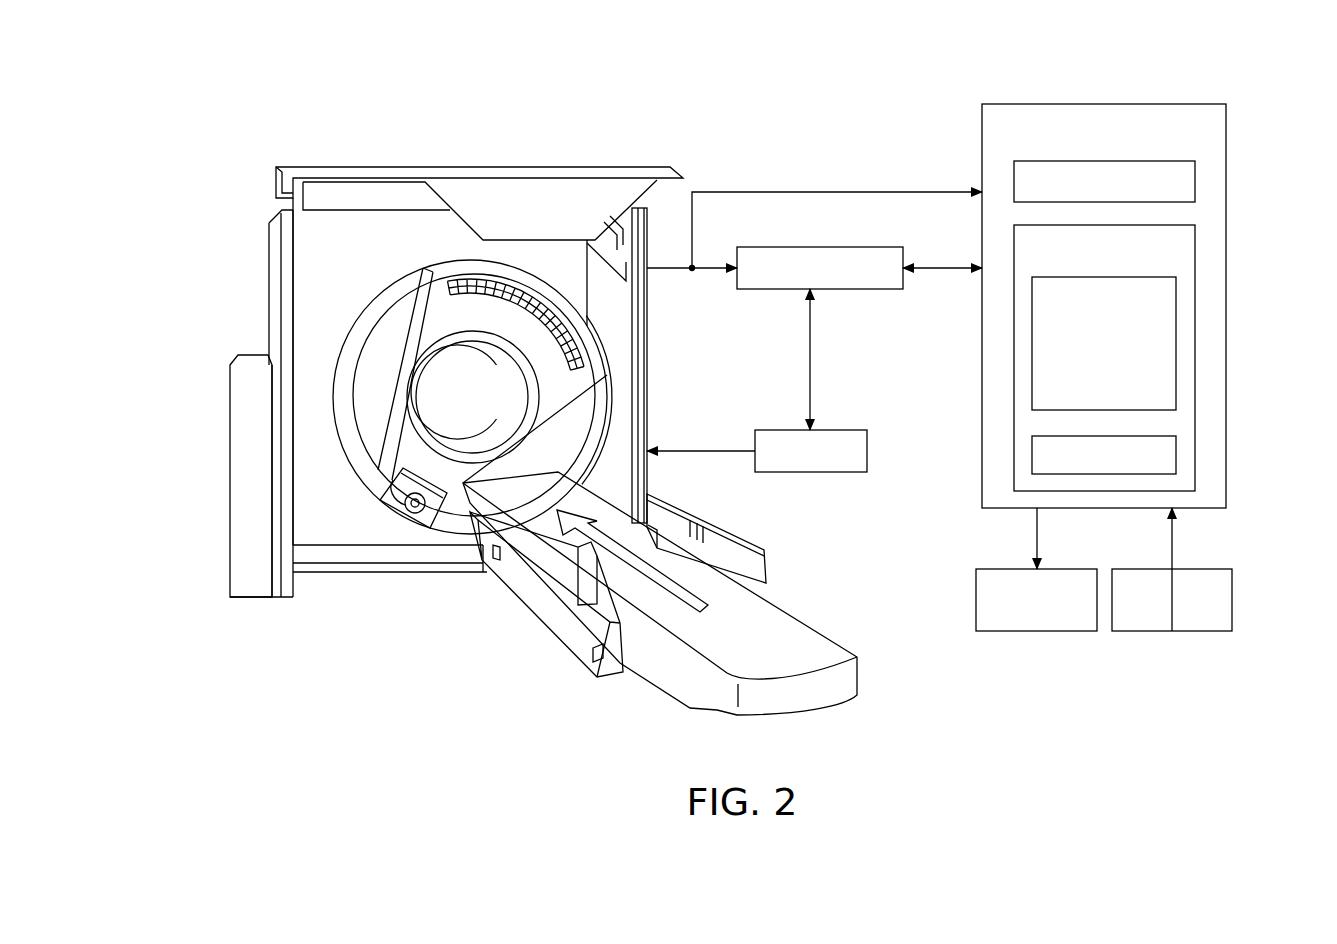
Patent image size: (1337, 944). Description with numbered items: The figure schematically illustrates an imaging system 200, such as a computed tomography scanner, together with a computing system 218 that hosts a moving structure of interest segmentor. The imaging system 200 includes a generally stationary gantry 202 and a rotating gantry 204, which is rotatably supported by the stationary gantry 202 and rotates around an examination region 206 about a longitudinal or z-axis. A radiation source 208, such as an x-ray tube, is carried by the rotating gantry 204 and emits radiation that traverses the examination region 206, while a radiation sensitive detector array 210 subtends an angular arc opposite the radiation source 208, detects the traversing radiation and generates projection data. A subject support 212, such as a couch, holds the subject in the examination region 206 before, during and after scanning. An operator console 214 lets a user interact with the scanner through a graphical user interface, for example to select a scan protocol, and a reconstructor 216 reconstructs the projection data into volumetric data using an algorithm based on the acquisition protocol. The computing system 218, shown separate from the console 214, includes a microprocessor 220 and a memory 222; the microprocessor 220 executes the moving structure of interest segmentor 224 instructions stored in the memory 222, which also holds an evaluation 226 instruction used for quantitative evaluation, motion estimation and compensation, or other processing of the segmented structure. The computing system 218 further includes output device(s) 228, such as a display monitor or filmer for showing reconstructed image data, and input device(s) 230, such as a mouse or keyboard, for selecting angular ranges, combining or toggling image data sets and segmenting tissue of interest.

The imaging system 200 is at (220, 146).
The stationary gantry 202 is at (272, 265).
The rotating gantry 204 is at (440, 322).
The examination region 206 is at (476, 399).
The radiation source 208 is at (407, 510).
The radiation sensitive detector array 210 is at (553, 300).
The subject support 212 is at (860, 690).
The operator console 214 is at (833, 472).
The reconstructor 216 is at (870, 289).
The computing system 218 is at (982, 128).
The microprocessor 220 is at (1195, 185).
The memory 222 is at (1195, 258).
The moving structure of interest segmentor 224 is at (1176, 350).
The evaluation 226 is at (1176, 458).
The output device(s) 228 is at (1038, 631).
The input device(s) 230 is at (1170, 631).